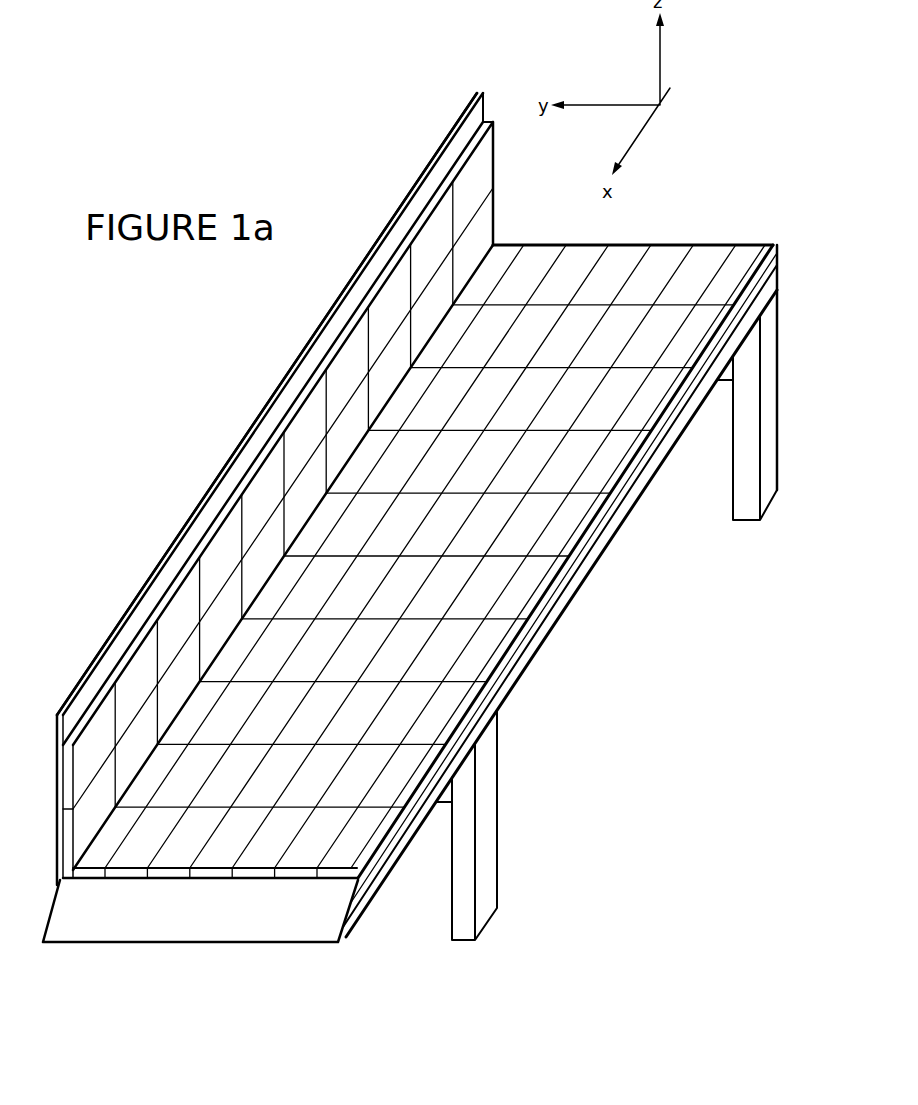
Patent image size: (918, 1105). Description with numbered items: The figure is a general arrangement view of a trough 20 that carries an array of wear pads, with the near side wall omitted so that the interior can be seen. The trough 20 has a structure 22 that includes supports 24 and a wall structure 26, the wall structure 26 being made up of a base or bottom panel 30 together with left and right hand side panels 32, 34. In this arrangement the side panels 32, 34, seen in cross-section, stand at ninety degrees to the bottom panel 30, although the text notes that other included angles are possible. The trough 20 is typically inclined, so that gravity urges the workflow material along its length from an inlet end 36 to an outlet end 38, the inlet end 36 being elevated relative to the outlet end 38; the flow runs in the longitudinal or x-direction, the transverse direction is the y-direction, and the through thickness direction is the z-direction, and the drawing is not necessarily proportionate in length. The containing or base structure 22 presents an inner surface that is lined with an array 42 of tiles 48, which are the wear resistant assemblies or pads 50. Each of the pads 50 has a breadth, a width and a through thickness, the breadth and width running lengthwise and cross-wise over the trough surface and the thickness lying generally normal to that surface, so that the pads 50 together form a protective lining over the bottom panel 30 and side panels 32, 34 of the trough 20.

The trough 20 is at (325, 142).
The structure 22 is at (135, 613).
The supports 24 is at (741, 503).
The wall structure 26 is at (117, 656).
The bottom panel 30 is at (527, 663).
The left hand side panel 32 is at (267, 404).
The right hand side panel 34 is at (278, 500).
The inlet end 36 is at (620, 262).
The outlet end 38 is at (293, 920).
The array 42 is at (709, 258).
The tiles 48 is at (268, 479).
The wear resistant pads 50 is at (528, 262).